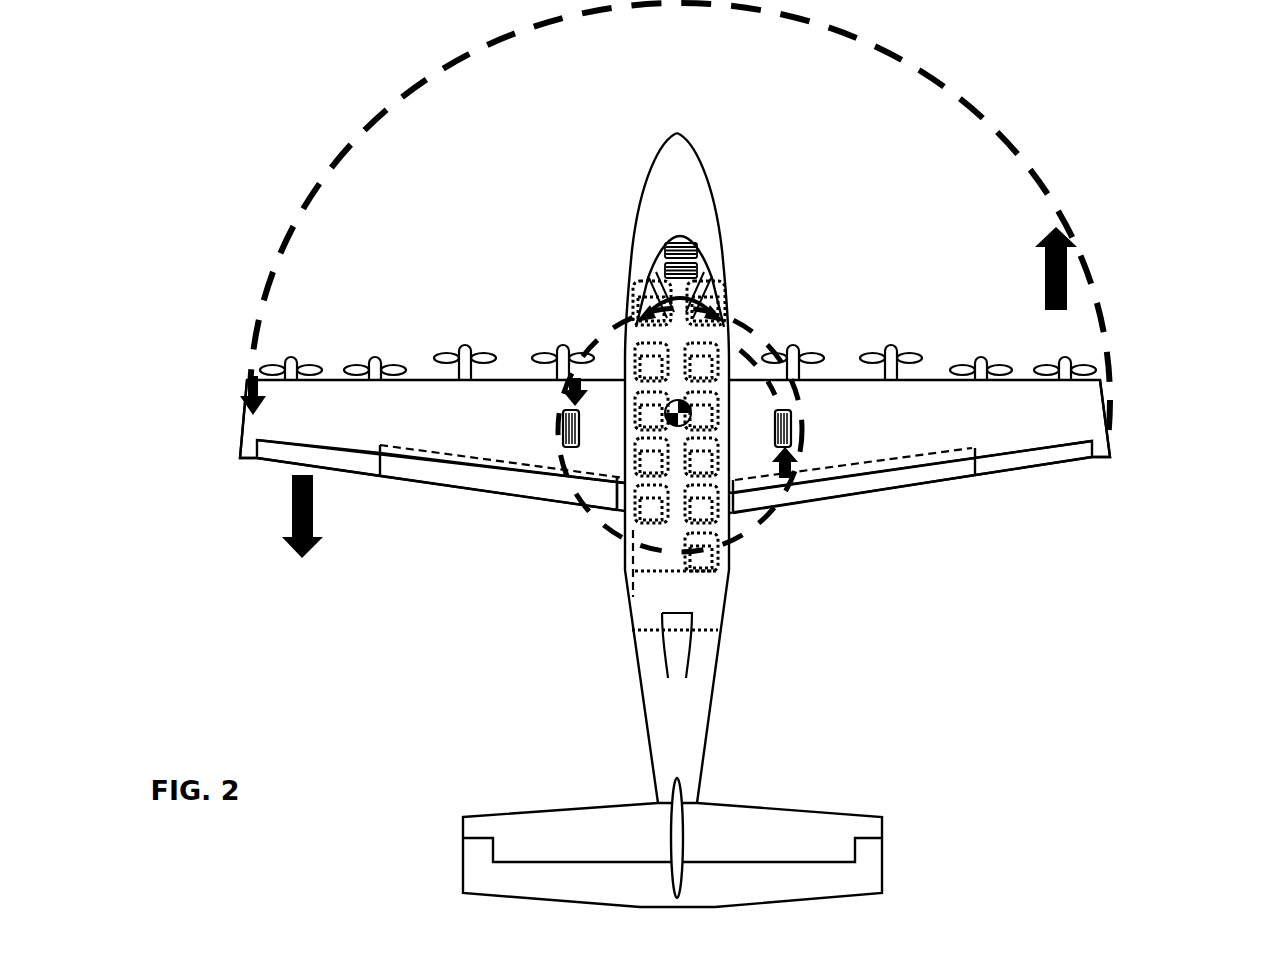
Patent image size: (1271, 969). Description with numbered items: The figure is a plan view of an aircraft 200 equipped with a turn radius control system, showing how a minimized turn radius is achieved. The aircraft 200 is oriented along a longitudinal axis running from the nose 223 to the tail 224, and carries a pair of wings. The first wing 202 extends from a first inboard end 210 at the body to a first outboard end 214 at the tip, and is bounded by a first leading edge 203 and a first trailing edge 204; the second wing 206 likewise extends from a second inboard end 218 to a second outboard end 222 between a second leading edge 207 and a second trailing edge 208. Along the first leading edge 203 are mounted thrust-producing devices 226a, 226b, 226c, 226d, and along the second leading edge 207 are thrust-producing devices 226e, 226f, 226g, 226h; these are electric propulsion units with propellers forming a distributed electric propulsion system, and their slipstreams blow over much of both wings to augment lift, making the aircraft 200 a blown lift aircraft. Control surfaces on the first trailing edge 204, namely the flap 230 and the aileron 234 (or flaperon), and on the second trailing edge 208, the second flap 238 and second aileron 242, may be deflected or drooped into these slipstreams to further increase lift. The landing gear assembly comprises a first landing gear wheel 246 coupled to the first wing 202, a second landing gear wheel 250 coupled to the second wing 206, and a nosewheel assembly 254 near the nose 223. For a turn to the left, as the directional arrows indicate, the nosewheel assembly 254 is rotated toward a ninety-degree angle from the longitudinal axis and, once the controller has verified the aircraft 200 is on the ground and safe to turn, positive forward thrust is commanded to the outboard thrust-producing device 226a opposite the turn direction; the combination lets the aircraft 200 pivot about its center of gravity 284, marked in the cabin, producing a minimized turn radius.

The aircraft 200 is at (160, 107).
The first wing 202 is at (1000, 418).
The first leading edge 203 is at (752, 356).
The first trailing edge 204 is at (943, 480).
The second wing 206 is at (493, 437).
The second leading edge 207 is at (598, 355).
The second trailing edge 208 is at (530, 475).
The first inboard end 210 is at (783, 480).
The first outboard end 214 is at (1110, 407).
The second inboard end 218 is at (620, 484).
The second outboard end 222 is at (247, 418).
The nose 223 is at (668, 172).
The tail 224 is at (575, 818).
The thrust-producing device 226a is at (1073, 356).
The thrust-producing device 226b is at (990, 352).
The thrust-producing device 226c is at (898, 350).
The thrust-producing device 226d is at (802, 350).
The thrust-producing device 226e is at (555, 343).
The thrust-producing device 226f is at (458, 343).
The thrust-producing device 226g is at (366, 352).
The thrust-producing device 226h is at (280, 352).
The flap 230 is at (887, 484).
The aileron 234 is at (1065, 461).
The second flap 238 is at (430, 476).
The second aileron 242 is at (283, 457).
The first landing gear wheel 246 is at (795, 455).
The second landing gear wheel 250 is at (571, 447).
The nosewheel assembly 254 is at (683, 242).
The center of gravity 284 is at (740, 518).